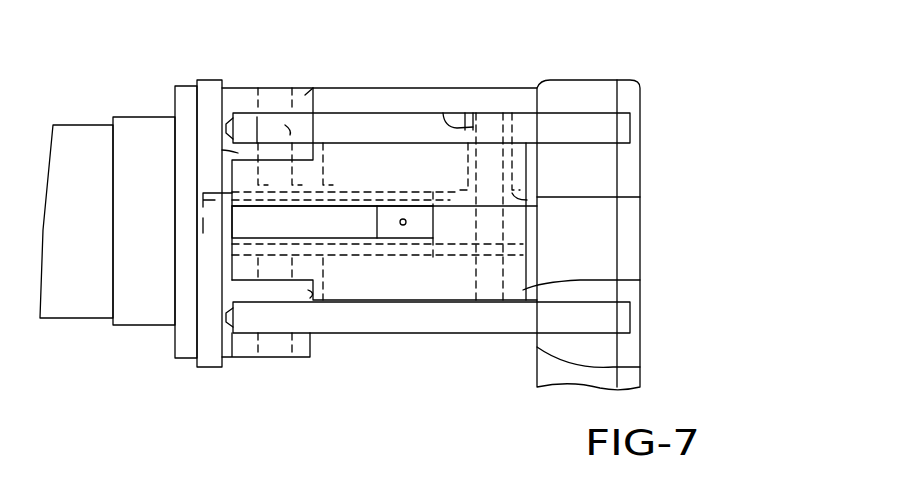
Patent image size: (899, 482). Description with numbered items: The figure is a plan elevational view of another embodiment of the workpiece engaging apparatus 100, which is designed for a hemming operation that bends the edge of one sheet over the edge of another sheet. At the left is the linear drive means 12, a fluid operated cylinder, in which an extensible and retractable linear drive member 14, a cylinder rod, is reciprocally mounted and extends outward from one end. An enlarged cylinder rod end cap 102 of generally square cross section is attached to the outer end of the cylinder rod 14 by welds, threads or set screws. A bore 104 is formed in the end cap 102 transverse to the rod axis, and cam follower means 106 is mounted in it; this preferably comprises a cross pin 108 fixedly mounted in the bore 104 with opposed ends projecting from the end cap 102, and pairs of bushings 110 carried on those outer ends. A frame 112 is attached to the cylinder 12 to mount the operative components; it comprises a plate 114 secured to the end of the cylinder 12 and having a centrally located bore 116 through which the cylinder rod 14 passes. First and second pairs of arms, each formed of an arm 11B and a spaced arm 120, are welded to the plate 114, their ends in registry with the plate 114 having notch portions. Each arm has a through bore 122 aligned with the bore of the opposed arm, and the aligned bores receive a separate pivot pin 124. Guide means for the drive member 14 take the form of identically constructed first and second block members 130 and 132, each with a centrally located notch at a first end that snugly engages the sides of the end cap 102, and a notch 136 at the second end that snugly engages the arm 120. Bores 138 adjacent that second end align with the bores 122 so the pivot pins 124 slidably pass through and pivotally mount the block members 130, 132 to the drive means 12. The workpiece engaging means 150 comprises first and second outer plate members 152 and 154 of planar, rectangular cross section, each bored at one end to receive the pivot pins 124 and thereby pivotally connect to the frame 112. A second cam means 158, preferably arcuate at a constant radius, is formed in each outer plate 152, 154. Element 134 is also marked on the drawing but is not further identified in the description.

The workpiece engaging apparatus 100 is at (135, 15).
The linear drive means 12 is at (83, 137).
The linear drive member 14 is at (332, 222).
The cylinder rod end cap 102 is at (450, 200).
The bore 104 is at (503, 210).
The cam follower means 106 is at (492, 303).
The cross pin 108 is at (478, 292).
The bushings 110 is at (442, 112).
The frame 112 is at (182, 83).
The plate 114 is at (207, 353).
The bore 116 is at (212, 252).
The arm 11B is at (310, 98).
The arm 120 is at (240, 153).
The through bore 122 is at (263, 367).
The pivot pin 124 is at (277, 367).
The first block member 130 is at (390, 158).
The second block member 132 is at (393, 293).
The surface 134 is at (645, 195).
The notch 136 is at (315, 110).
The bores 138 is at (290, 133).
The workpiece engaging means 150 is at (708, 130).
The first outer plate member 152 is at (520, 117).
The second outer plate member 154 is at (603, 321).
The second cam means 158 is at (313, 270).